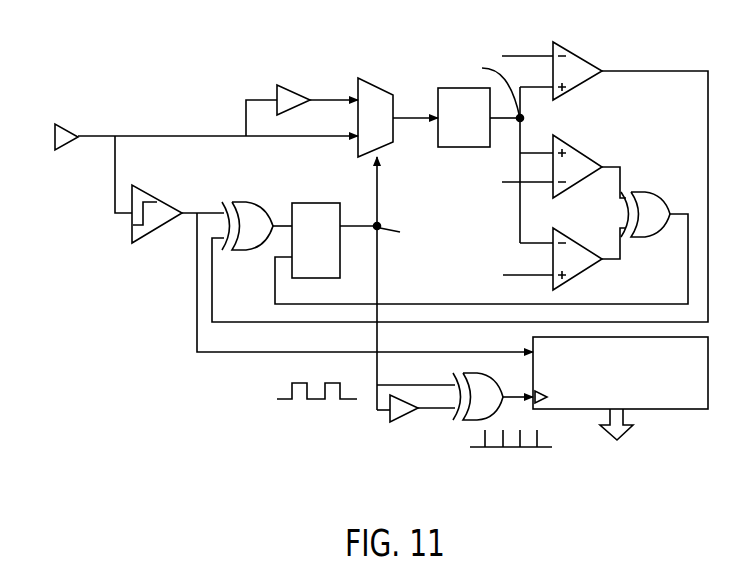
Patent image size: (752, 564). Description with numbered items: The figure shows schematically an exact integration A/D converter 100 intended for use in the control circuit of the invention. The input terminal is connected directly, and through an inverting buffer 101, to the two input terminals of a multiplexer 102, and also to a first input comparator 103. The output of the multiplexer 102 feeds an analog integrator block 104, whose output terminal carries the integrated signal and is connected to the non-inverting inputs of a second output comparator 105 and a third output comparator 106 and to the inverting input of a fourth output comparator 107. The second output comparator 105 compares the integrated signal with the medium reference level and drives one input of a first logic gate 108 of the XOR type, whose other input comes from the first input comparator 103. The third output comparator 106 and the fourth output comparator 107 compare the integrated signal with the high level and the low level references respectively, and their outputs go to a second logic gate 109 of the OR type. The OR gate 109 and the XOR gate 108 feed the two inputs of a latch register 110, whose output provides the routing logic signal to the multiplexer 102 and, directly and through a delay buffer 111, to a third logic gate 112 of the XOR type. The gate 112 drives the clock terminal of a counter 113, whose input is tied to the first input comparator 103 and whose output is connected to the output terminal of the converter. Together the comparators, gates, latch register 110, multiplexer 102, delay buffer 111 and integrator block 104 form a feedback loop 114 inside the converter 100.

The exact integration A/D converter 100 is at (188, 430).
The inverting buffer 101 is at (277, 83).
The multiplexer 102 is at (373, 98).
The first input comparator 103 is at (156, 220).
The analog integrator block 104 is at (449, 148).
The second output comparator 105 is at (582, 65).
The third output comparator 106 is at (585, 160).
The fourth output comparator 107 is at (583, 257).
The first logic gate 108 is at (258, 212).
The second logic gate 109 is at (655, 200).
The latch register 110 is at (318, 213).
The delay buffer 111 is at (402, 418).
The third logic gate 112 is at (470, 420).
The counter 113 is at (700, 410).
The feedback loop 114 is at (192, 150).